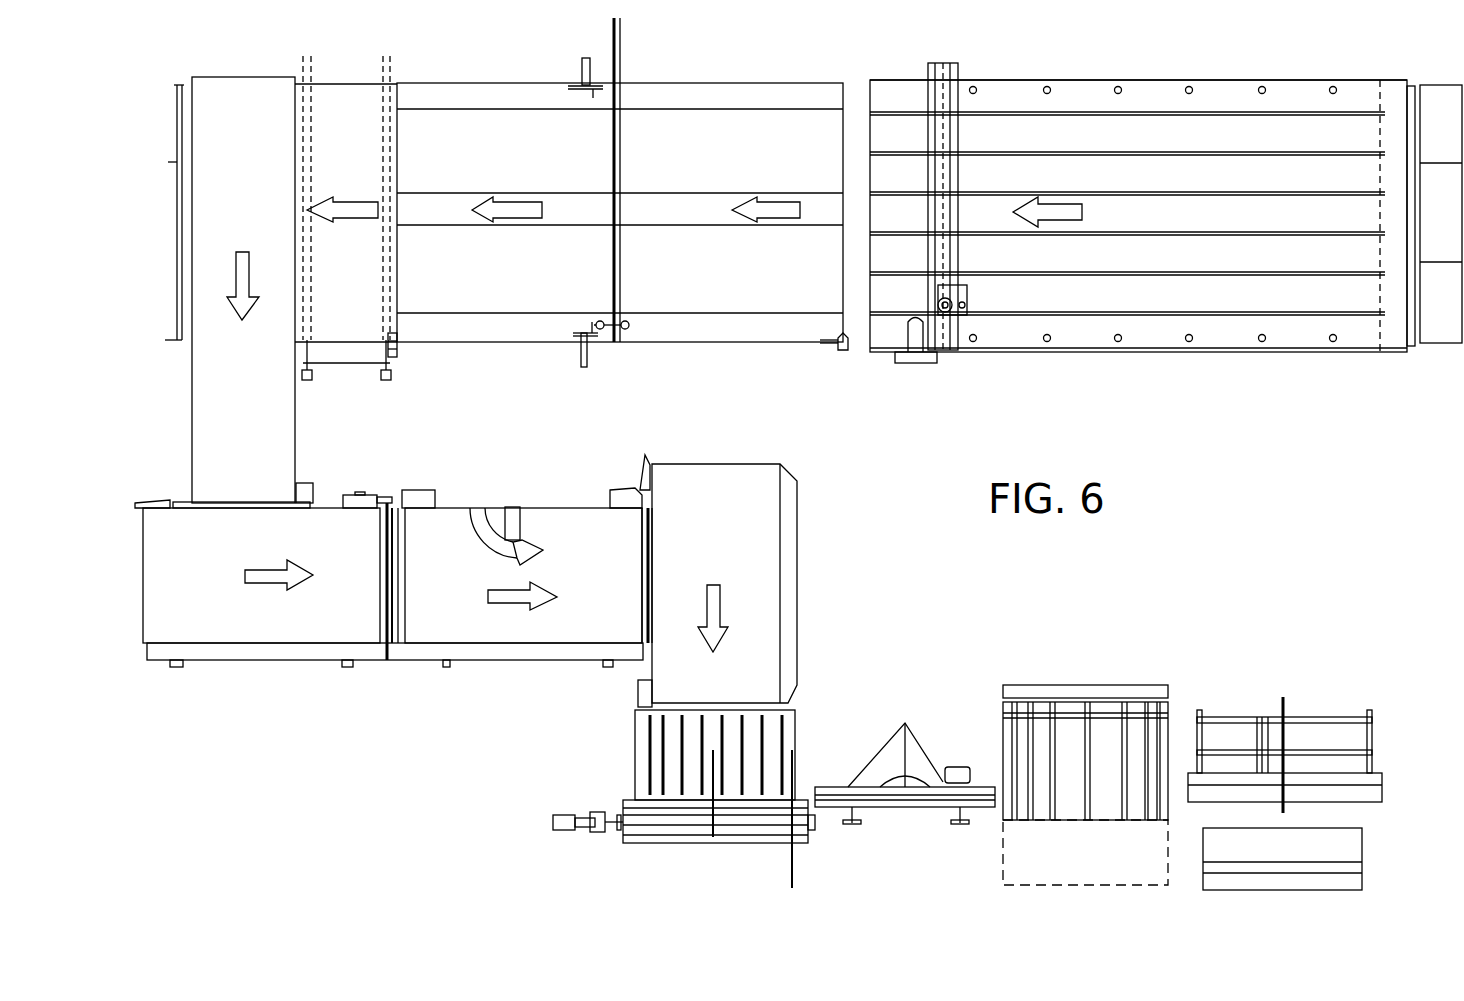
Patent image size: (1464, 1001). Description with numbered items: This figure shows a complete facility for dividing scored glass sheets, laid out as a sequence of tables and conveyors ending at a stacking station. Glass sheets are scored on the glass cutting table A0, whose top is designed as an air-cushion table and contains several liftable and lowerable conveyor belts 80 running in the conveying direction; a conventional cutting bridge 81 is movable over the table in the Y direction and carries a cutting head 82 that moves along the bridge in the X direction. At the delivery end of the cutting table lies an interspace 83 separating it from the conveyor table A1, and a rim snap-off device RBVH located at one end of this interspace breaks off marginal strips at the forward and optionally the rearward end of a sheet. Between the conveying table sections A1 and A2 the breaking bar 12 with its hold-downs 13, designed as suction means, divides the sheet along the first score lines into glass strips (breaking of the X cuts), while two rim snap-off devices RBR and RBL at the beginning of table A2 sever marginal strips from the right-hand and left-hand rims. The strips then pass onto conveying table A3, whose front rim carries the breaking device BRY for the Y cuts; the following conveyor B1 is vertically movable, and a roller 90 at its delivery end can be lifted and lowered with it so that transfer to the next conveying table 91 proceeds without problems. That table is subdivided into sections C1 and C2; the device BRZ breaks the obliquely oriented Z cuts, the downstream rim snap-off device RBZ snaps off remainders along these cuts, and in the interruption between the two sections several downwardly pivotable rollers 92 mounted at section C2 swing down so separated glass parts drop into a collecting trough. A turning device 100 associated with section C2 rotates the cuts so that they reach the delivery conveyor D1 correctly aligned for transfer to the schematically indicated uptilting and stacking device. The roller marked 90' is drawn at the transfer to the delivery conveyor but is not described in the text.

The breaking bar 12 is at (620, 98).
The hold-downs 13 is at (629, 325).
The conveyor belts 80 is at (1278, 112).
The cutting bridge 81 is at (947, 92).
The cutting head 82 is at (966, 300).
The interspace 83 is at (857, 92).
The roller 90 is at (250, 481).
The transfer station 90' is at (612, 581).
The conveying table 91 is at (310, 681).
The downwardly pivotable rollers 92 is at (392, 645).
The device for turning glass sheet cuts 100 is at (497, 520).
The rim snap-off device RBR is at (580, 62).
The rim snap-off device RBL is at (588, 355).
The rim snap-off device RBVH is at (850, 352).
The device for breaking the glass strips along the Y score lines BRY is at (400, 358).
The device for breaking the Z cuts BRZ is at (385, 497).
The rim snap-off device RBZ is at (420, 492).
The glass cutting table A0 is at (1166, 221).
The conveyor table A1 is at (747, 211).
The conveying table A2 is at (620, 212).
The conveying table A3 is at (346, 218).
The conveyor belt B1 is at (239, 290).
The section C1 is at (389, 583).
The section C2 is at (523, 575).
The delivery conveyor D1 is at (724, 583).